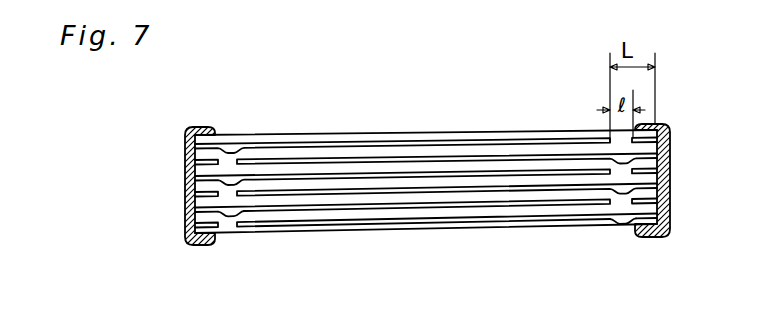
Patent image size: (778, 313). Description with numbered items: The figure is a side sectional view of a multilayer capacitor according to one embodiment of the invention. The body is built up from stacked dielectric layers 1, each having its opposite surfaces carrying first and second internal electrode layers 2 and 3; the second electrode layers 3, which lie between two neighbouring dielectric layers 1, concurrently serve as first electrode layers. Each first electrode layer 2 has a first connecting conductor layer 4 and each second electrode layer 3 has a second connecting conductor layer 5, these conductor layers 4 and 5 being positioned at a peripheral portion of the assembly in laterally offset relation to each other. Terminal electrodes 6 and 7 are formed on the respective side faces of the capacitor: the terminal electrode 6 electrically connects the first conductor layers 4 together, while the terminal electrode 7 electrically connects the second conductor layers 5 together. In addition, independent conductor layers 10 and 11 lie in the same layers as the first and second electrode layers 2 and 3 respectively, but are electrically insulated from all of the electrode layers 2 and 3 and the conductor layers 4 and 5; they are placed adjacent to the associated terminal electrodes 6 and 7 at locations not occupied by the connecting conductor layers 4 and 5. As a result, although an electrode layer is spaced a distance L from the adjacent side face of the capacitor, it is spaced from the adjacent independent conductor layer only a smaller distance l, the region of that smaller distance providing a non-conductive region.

The dielectric layer 1 is at (525, 225).
The first internal electrode layer 2 is at (426, 258).
The second internal electrode layer 3 is at (426, 251).
The first connecting conductor layer 4 is at (623, 215).
The second connecting conductor layer 5 is at (222, 210).
The terminal electrode 6 is at (672, 210).
The terminal electrode 7 is at (186, 141).
The independent conductor layer 10 is at (379, 220).
The independent conductor layer 11 is at (467, 212).